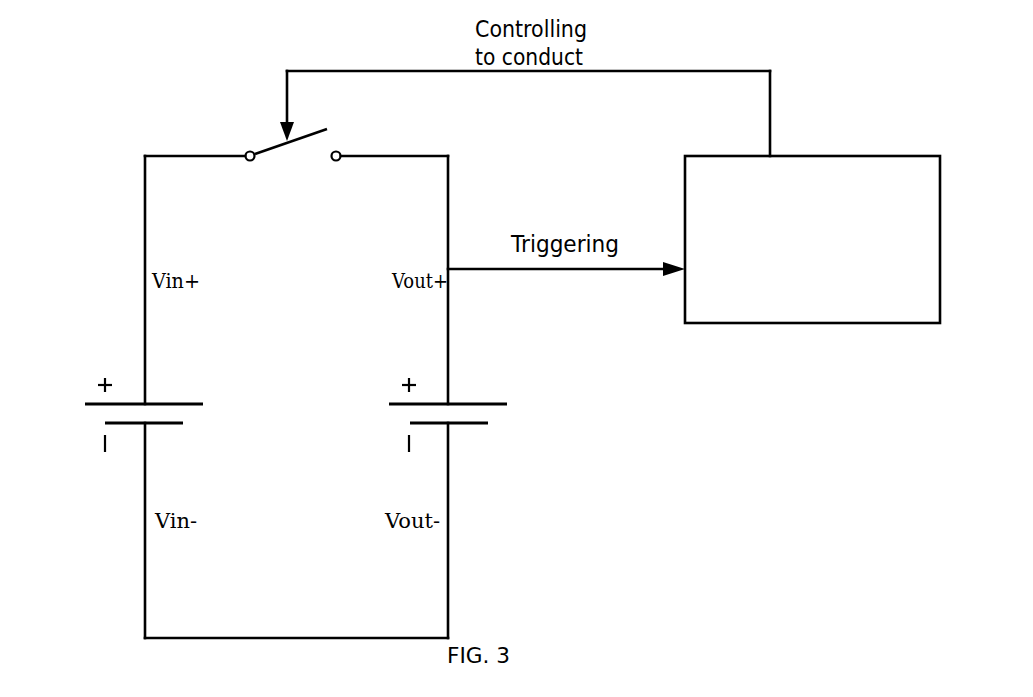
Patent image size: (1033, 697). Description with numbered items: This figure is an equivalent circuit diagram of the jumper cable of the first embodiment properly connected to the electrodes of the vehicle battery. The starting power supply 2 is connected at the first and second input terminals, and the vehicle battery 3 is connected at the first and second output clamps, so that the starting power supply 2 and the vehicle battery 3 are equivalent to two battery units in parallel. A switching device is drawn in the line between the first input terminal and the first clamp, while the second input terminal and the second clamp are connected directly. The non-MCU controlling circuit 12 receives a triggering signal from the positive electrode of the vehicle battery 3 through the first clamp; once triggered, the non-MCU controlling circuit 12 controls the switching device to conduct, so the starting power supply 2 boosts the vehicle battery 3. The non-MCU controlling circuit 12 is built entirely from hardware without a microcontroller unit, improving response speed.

The starting power supply 2 is at (115, 365).
The vehicle battery 3 is at (478, 367).
The non-MCU controlling circuit 12 is at (820, 179).